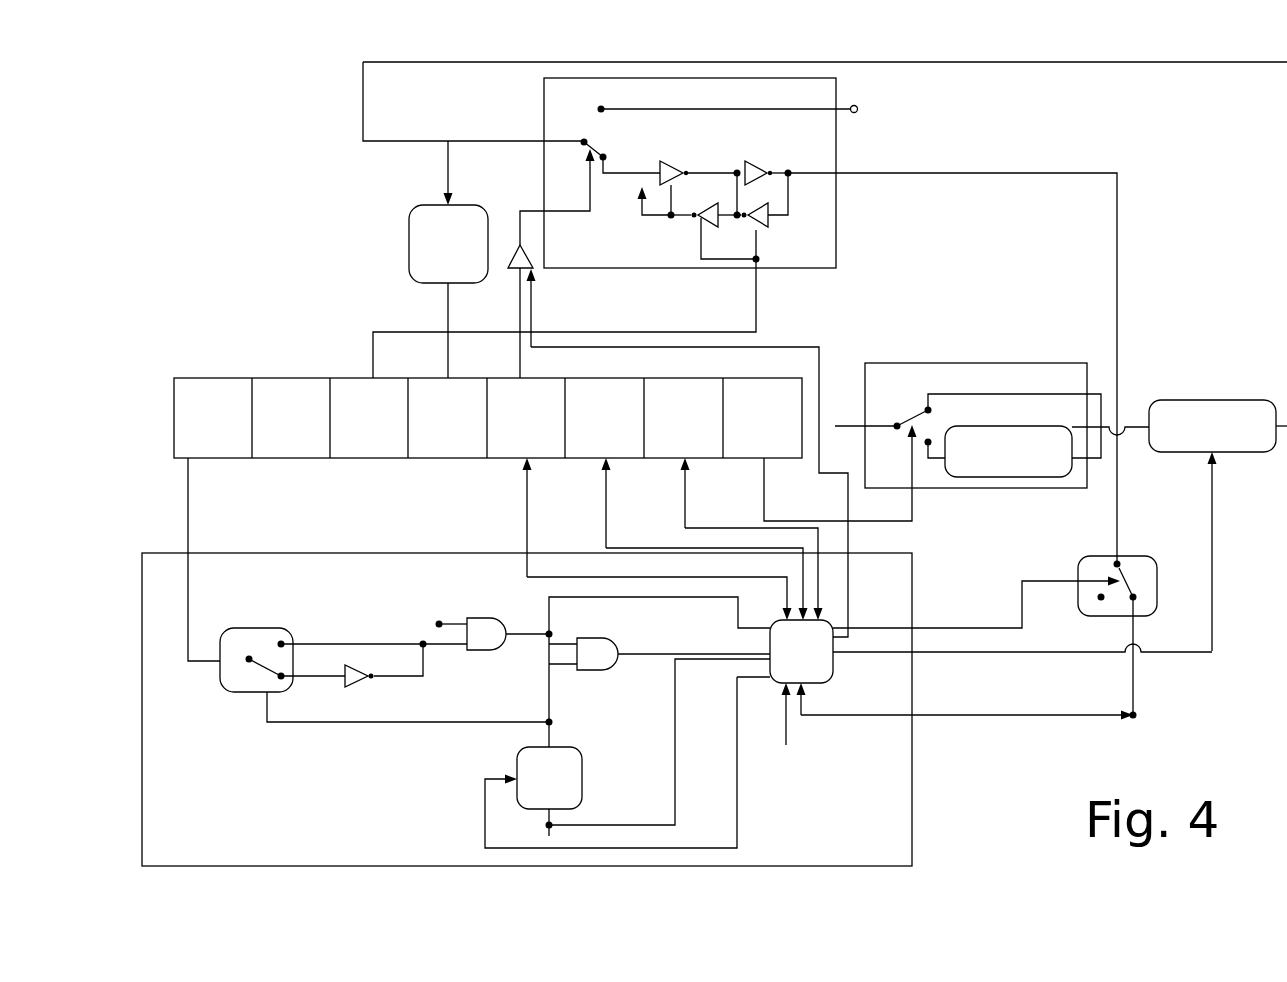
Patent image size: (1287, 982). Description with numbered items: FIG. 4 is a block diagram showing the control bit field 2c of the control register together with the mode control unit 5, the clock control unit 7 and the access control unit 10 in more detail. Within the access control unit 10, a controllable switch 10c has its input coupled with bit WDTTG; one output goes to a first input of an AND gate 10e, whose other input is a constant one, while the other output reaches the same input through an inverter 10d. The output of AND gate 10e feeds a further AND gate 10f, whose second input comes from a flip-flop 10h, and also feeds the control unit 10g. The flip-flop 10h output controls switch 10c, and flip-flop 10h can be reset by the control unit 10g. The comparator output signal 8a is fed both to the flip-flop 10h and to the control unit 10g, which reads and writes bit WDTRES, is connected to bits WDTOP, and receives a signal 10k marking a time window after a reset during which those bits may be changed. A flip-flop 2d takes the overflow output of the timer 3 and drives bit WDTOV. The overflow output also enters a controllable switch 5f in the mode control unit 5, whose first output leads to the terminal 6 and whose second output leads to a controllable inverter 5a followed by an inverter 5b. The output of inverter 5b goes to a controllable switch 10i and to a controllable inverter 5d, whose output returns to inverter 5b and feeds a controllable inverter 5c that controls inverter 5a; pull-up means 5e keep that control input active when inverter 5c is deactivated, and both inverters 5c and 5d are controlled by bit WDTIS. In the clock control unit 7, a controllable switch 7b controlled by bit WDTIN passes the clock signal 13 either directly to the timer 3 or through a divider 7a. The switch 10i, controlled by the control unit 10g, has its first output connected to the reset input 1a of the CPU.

The reset input 1a is at (1136, 718).
The control bit field 2c is at (508, 270).
The flip-flop 2d is at (409, 240).
The timer 3 is at (1240, 398).
The mode control unit 5 is at (544, 115).
The controllable inverter 5a is at (675, 166).
The inverter 5b is at (762, 166).
The controllable inverter 5c is at (710, 222).
The controllable inverter 5d is at (767, 223).
The pull-up means 5e is at (640, 218).
The controllable switch 5f is at (598, 140).
The terminal 6 is at (857, 106).
The clock control unit 7 is at (1004, 362).
The divider 7a is at (1007, 477).
The controllable switch 7b is at (925, 405).
The comparator output signal 8a is at (551, 835).
The access control unit 10 is at (527, 709).
The controllable switch 10c is at (243, 637).
The inverter 10d is at (355, 683).
The AND gate 10e is at (489, 616).
The AND gate 10f is at (590, 638).
The control unit 10g is at (991, 667).
The flip-flop 10h is at (582, 786).
The controllable switch 10i is at (1133, 550).
The signal 10k is at (786, 745).
The clock signal 13 is at (866, 412).